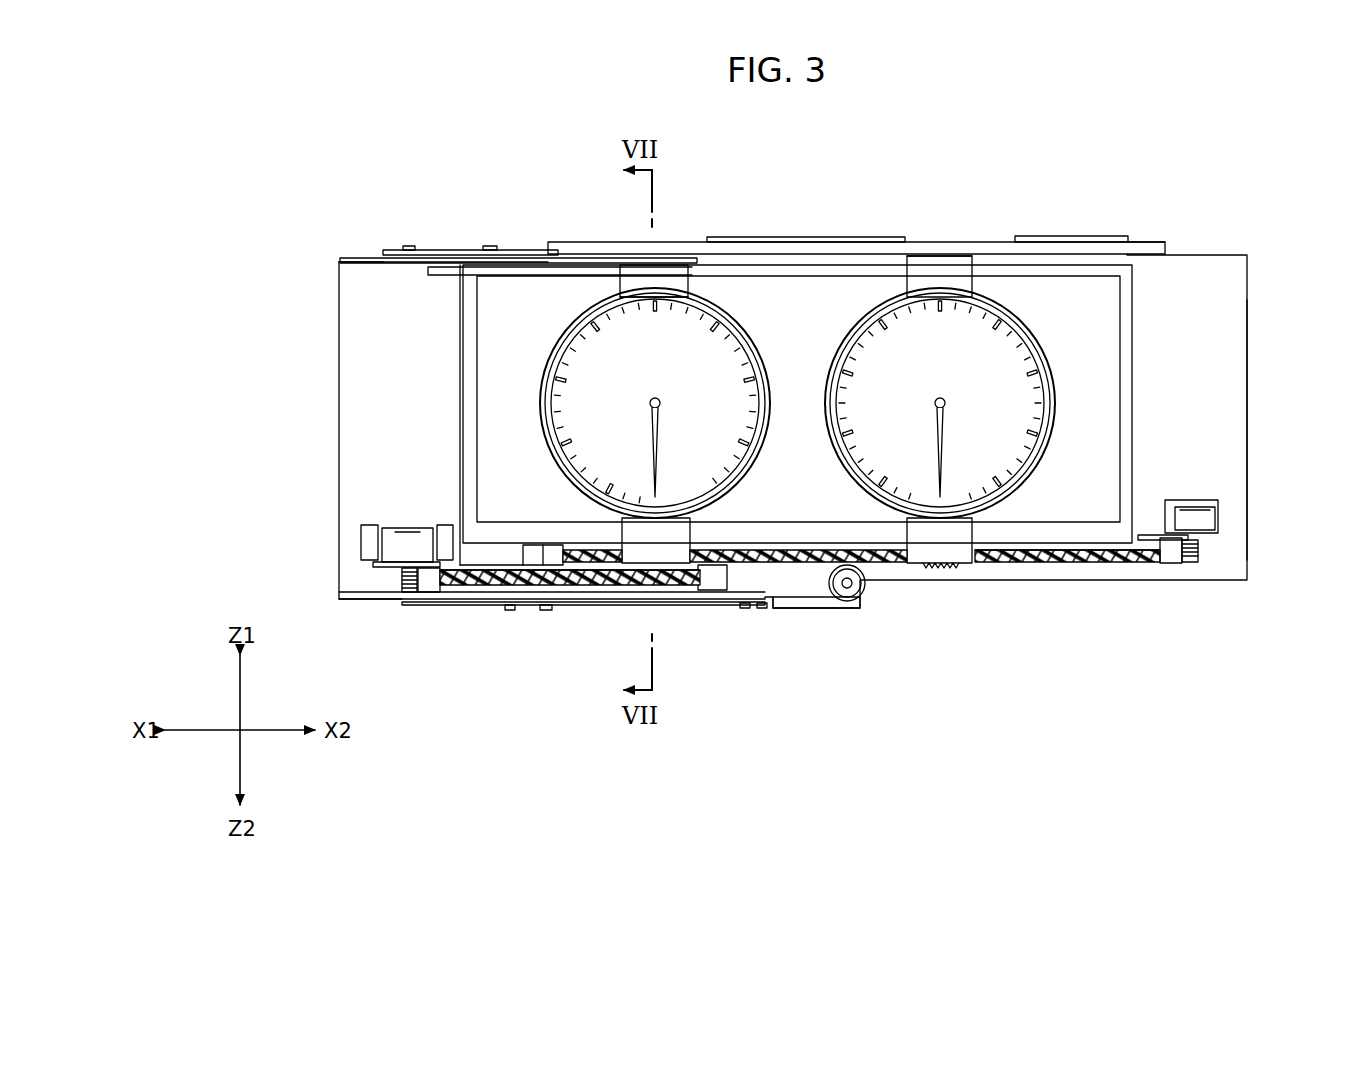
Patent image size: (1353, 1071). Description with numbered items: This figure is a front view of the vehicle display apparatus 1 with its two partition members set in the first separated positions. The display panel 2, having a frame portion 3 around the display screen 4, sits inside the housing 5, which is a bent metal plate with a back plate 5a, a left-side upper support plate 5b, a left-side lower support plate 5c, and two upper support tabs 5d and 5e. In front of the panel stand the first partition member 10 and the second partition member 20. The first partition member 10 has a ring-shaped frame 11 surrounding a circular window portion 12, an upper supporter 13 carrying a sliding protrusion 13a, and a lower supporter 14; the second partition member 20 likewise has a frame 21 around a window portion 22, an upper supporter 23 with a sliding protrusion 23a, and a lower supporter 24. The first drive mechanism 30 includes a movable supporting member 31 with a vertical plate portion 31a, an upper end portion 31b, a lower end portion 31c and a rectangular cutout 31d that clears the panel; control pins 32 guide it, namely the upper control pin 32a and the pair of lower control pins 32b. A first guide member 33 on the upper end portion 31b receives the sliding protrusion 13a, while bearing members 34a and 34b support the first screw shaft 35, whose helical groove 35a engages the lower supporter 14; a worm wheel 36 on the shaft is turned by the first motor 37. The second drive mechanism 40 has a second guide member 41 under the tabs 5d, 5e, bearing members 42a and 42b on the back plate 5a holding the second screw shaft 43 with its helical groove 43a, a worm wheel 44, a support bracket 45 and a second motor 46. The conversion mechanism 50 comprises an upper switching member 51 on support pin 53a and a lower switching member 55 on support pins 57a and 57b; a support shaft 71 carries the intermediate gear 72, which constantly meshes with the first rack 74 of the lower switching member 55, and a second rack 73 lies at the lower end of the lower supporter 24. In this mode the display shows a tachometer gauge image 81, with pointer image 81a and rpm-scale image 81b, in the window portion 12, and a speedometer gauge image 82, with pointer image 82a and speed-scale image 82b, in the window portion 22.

The vehicle display apparatus 1 is at (1045, 195).
The display panel 2 is at (1140, 432).
The frame portion 3 is at (1125, 476).
The display screen 4 is at (1105, 402).
The housing 5 is at (1250, 365).
The back plate 5a is at (1222, 430).
The upper support plate 5b is at (343, 258).
The lower support plate 5c is at (355, 600).
The upper support tab 5d is at (856, 237).
The upper support tab 5e is at (1110, 236).
The first partition member 10 is at (692, 403).
The ring-shaped frame 11 is at (738, 325).
The circular window portion 12 is at (556, 405).
The upper supporter 13 is at (620, 282).
The sliding protrusion 13a is at (688, 282).
The lower supporter 14 is at (680, 535).
The second partition member 20 is at (1000, 403).
The ring-shaped frame 21 is at (1040, 345).
The circular window portion 22 is at (870, 418).
The upper supporter 23 is at (972, 282).
The sliding protrusion 23a is at (940, 256).
The lower supporter 24 is at (970, 535).
The first drive mechanism 30 is at (338, 570).
The movable supporting member 31 is at (339, 415).
The vertical plate portion 31a is at (356, 349).
The upper end portion 31b is at (340, 268).
The lower end portion 31c is at (366, 594).
The rectangular cutout 31d is at (468, 372).
The circuit board 32 is at (552, 431).
The upper control pin 32a is at (490, 246).
The lower control pins 32b is at (510, 610).
The first guide member 33 is at (440, 276).
The bearing member 34a is at (430, 592).
The bearing member 34b is at (710, 590).
The first screw shaft 35 is at (600, 585).
The helical groove 35a is at (585, 585).
The worm wheel 36 is at (412, 592).
The first motor 37 is at (400, 540).
The second drive mechanism 40 is at (1218, 552).
The second guide member 41 is at (1158, 242).
The bearing member 42a is at (548, 555).
The bearing member 42b is at (1170, 563).
The second screw shaft 43 is at (1095, 562).
The helical groove 43a is at (1065, 562).
The worm wheel 44 is at (1190, 562).
The support bracket 45 is at (1218, 522).
The second motor 46 is at (1205, 515).
The conversion mechanism 50 is at (855, 628).
The upper switching member 51 is at (383, 250).
The support pin 53a is at (410, 246).
The lower switching member 55 is at (660, 600).
The support pin 57a is at (546, 610).
The support pin 57b is at (762, 608).
The support shaft 71 is at (852, 588).
The intermediate gear 72 is at (865, 583).
The second rack 73 is at (942, 570).
The first rack 74 is at (808, 605).
The gauge image 81 is at (712, 408).
The pointer image 81a is at (652, 448).
The rpm-scale image 81b is at (654, 402).
The gauge image 82 is at (985, 428).
The pointer image 82a is at (937, 448).
The speed-scale image 82b is at (940, 400).